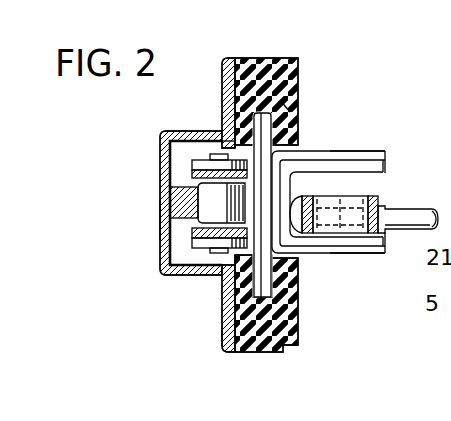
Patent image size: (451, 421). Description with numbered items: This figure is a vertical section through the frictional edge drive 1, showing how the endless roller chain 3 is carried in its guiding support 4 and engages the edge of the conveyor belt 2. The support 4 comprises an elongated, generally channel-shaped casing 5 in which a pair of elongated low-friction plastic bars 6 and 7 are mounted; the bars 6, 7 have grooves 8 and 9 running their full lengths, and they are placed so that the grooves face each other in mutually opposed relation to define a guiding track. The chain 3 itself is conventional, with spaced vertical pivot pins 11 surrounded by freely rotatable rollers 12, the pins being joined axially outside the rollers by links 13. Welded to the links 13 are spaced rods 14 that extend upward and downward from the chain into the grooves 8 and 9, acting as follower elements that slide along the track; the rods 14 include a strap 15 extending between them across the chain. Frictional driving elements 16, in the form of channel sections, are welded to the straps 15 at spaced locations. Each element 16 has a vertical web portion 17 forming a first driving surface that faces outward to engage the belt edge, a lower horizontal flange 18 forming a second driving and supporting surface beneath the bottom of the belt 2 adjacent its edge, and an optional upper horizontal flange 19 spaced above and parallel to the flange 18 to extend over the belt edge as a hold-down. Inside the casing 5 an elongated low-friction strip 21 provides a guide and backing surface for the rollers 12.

The frictional edge drive 1 is at (157, 233).
The conveyor belt 2 is at (365, 194).
The endless roller chain 3 is at (136, 241).
The guiding support 4 is at (221, 338).
The casing 5 is at (167, 139).
The bar 6 is at (298, 77).
The bar 7 is at (292, 344).
The groove 8 is at (282, 110).
The groove 9 is at (263, 304).
The pivot pin 11 is at (232, 147).
The roller 12 is at (202, 184).
The link 13 is at (205, 160).
The rod 14 is at (253, 108).
The strap 15 is at (267, 221).
The frictional driving element 16 is at (388, 149).
The vertical web portion 17 is at (293, 192).
The horizontal flange 18 is at (368, 254).
The upper horizontal flange 19 is at (358, 155).
The strip 21 is at (178, 201).